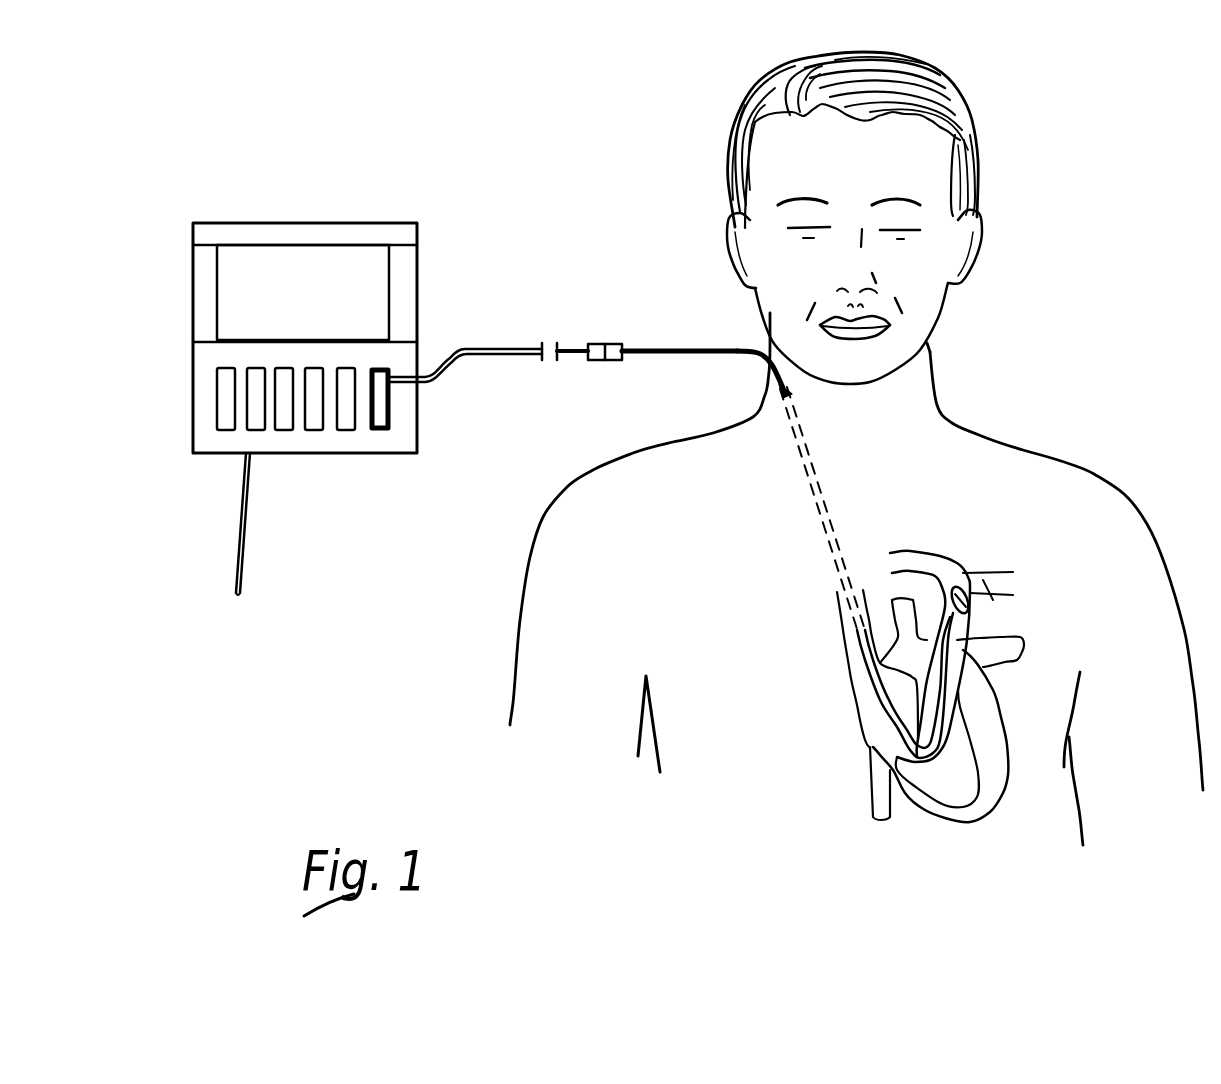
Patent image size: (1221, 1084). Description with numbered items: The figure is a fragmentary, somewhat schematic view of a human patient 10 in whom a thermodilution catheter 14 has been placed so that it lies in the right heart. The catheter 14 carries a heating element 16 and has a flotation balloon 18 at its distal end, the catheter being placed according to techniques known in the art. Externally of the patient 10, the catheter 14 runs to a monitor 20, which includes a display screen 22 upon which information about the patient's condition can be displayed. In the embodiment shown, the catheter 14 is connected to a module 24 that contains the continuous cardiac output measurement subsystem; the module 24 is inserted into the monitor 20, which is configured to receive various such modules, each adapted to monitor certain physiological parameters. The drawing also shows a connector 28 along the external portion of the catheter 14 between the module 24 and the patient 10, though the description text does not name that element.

The human patient 10 is at (1062, 460).
The thermodilution catheter 14 is at (713, 348).
The heating element 16 is at (870, 747).
The flotation balloon 18 is at (958, 562).
The monitor 20 is at (355, 397).
The display screen 22 is at (313, 293).
The module 24 is at (390, 398).
The cable connector 28 is at (573, 350).